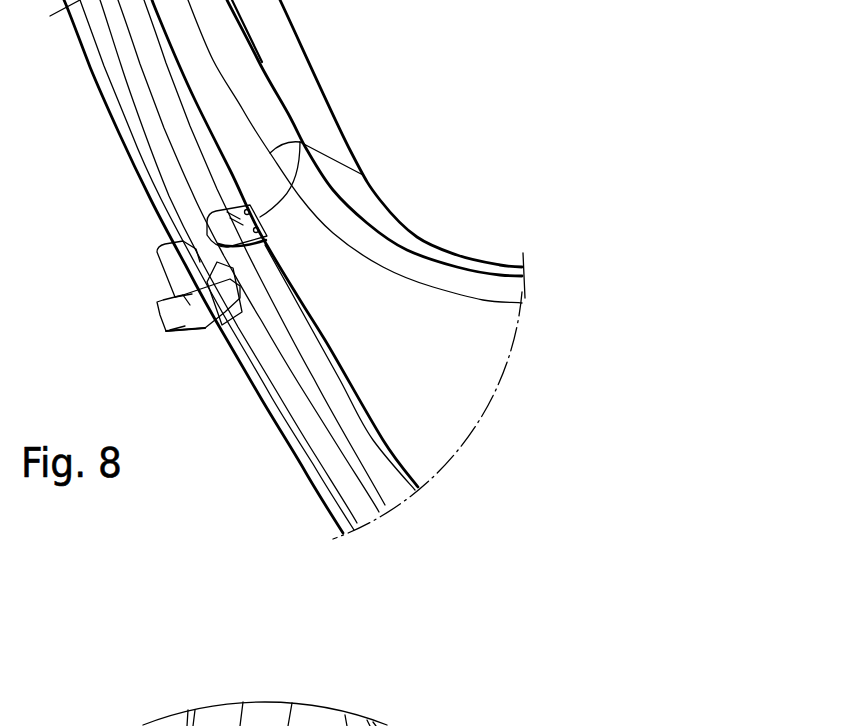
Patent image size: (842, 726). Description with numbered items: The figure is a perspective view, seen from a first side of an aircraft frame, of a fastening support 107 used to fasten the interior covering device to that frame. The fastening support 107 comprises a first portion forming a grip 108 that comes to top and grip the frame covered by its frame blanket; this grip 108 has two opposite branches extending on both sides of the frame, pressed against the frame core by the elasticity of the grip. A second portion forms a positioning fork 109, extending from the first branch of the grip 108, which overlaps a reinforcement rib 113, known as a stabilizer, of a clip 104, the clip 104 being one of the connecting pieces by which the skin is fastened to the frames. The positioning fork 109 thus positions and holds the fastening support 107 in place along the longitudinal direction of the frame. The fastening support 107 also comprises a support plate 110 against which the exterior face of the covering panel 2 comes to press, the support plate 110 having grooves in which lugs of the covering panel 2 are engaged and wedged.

The covering panel 2 is at (462, 415).
The clip 104 is at (193, 295).
The fastening support 107 is at (205, 224).
The grip 108 is at (213, 252).
The positioning fork 109 is at (232, 282).
The support plate 110 is at (300, 142).
The reinforcement rib 113 is at (187, 323).